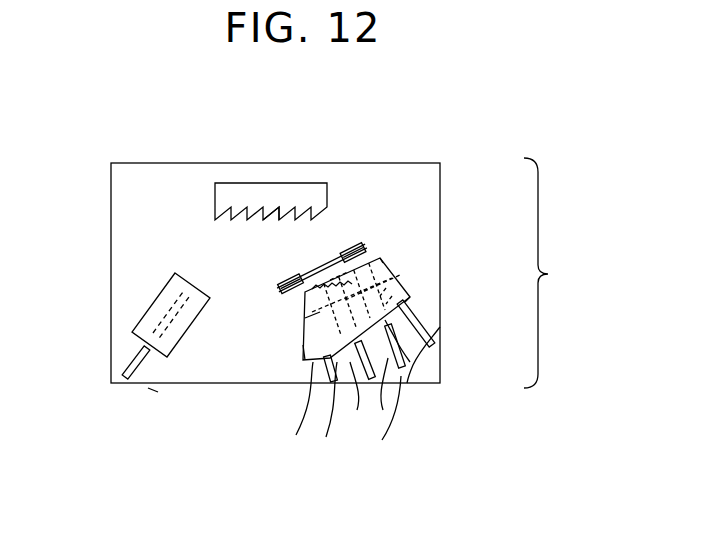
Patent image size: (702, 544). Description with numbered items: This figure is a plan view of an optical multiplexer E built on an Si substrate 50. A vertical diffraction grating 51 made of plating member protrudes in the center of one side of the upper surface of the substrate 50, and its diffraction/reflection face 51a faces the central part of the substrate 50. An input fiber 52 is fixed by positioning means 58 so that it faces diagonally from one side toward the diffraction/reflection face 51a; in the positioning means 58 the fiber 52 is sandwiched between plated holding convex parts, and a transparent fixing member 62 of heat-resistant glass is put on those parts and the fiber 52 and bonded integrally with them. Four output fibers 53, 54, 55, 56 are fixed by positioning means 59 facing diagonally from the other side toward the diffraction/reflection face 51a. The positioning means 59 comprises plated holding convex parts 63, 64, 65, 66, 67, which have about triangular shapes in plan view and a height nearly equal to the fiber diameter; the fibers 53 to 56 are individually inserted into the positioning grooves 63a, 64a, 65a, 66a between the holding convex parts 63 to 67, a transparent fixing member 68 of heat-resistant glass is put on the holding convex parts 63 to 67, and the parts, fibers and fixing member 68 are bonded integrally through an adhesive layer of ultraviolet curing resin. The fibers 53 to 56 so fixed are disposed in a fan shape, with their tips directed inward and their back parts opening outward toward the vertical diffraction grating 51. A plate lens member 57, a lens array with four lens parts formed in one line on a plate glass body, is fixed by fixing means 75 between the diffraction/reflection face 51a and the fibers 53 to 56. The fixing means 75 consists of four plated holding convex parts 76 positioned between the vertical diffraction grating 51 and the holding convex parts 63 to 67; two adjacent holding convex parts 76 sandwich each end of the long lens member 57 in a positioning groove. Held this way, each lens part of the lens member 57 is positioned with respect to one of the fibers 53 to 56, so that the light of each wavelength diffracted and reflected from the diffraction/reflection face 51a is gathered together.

The Si substrate 50 is at (121, 190).
The vertical diffraction grating 51 is at (256, 188).
The diffraction/reflection face 51a is at (310, 208).
The input fiber 52 is at (134, 366).
The output fiber 53 is at (346, 405).
The output fiber 54 is at (386, 398).
The output fiber 55 is at (431, 348).
The output fiber 56 is at (440, 327).
The plate lens member 57 is at (331, 256).
The positioning means 58 is at (142, 307).
The positioning means 59 is at (289, 348).
The transparent fixing member 62 is at (155, 356).
The holding convex part 63 is at (307, 411).
The positioning groove 63a is at (301, 361).
The holding convex part 64 is at (363, 401).
The positioning groove 64a is at (301, 323).
The holding convex part 65 is at (400, 399).
The positioning groove 65a is at (386, 288).
The holding convex part 66 is at (410, 362).
The positioning groove 66a is at (392, 296).
The holding convex part 67 is at (412, 297).
The transparent fixing member 68 is at (383, 263).
The fixing means 75 is at (351, 233).
The holding convex part 76 is at (360, 245).
The multiplexer E is at (547, 273).